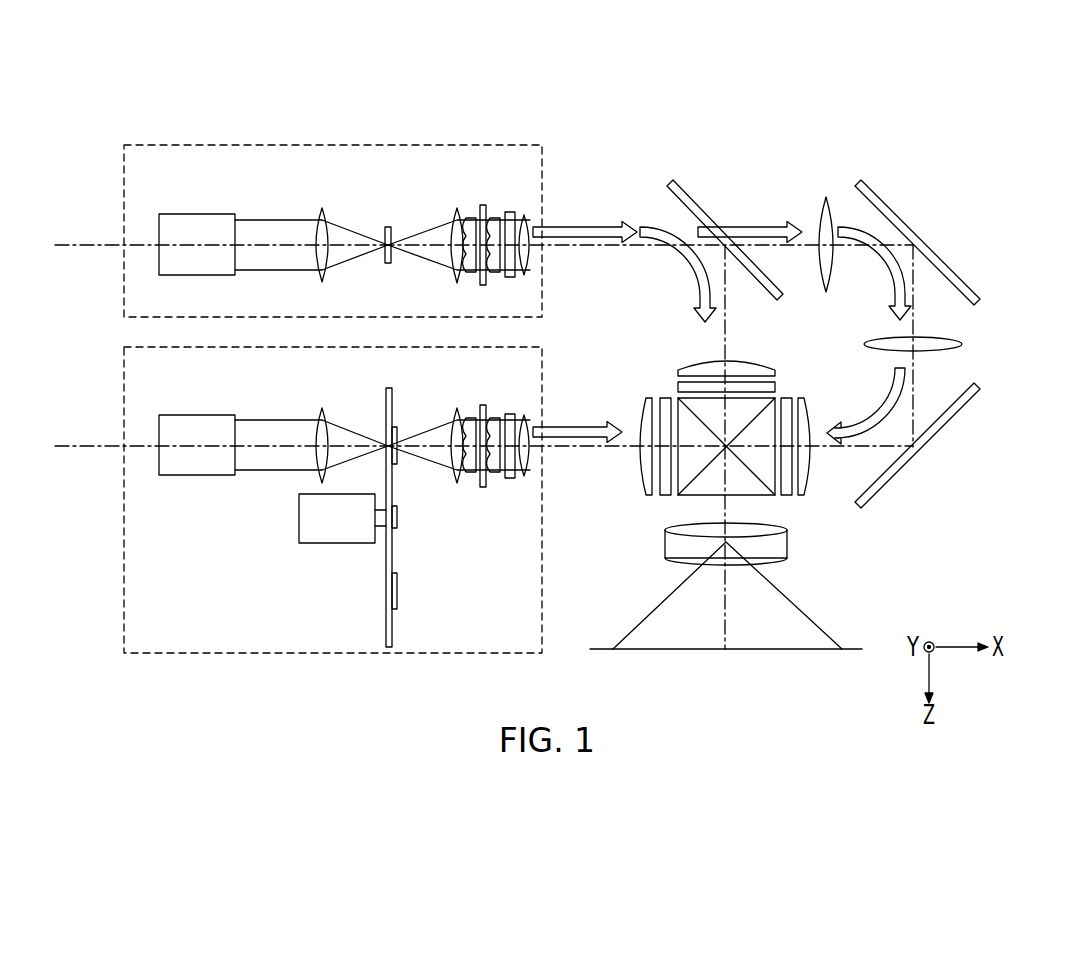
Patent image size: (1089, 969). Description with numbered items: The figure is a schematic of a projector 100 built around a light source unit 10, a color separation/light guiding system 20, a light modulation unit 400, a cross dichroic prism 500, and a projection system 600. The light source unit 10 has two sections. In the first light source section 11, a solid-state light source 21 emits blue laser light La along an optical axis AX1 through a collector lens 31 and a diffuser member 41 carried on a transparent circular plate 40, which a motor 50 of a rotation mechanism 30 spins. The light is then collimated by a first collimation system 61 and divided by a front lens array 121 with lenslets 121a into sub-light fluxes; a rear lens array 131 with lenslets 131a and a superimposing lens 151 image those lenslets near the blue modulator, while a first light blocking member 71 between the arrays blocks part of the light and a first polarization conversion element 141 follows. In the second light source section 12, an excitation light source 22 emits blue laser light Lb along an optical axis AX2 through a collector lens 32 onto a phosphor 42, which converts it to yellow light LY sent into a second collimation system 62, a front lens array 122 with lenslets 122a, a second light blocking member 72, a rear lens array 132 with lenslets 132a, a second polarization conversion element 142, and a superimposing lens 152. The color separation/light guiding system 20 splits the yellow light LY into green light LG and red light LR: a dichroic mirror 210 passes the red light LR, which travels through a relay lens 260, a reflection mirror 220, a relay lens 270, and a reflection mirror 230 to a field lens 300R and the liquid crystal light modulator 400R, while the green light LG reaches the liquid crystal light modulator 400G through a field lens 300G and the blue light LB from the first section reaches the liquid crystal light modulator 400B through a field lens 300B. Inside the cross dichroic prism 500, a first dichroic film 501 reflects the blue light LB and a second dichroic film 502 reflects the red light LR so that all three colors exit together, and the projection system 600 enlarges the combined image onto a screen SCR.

The projector 100 is at (962, 66).
The light source unit 10 is at (411, 122).
The first light source section 11 is at (228, 653).
The second light source section 12 is at (228, 145).
The color separation/light guiding system 20 is at (830, 140).
The solid-state light source 21 is at (193, 465).
The excitation light source 22 is at (193, 225).
The rotation mechanism 30 is at (405, 543).
The collector lens 31 is at (318, 483).
The collector lens 32 is at (326, 208).
The circular plate 40 is at (388, 647).
The diffuser member 41 is at (397, 430).
The phosphor 42 is at (388, 227).
The motor 50 is at (330, 540).
The first collimation system 61 is at (456, 408).
The second collimation system 62 is at (455, 282).
The first light blocking member 71 is at (483, 405).
The second light blocking member 72 is at (483, 205).
The front lens array 121 is at (471, 418).
The lenslet 121a is at (472, 474).
The front lens array 122 is at (470, 274).
The lenslet 122a is at (466, 218).
The rear lens array 131 is at (495, 418).
The lenslet 131a is at (496, 474).
The rear lens array 132 is at (497, 275).
The lenslet 132a is at (492, 218).
The first polarization conversion element 141 is at (510, 478).
The second polarization conversion element 142 is at (510, 212).
The superimposing lens 151 is at (526, 477).
The superimposing lens 152 is at (525, 215).
The dichroic mirror 210 is at (672, 182).
The light-incident-side reflection mirror 220 is at (900, 216).
The light-exiting-side reflection mirror 230 is at (921, 452).
The relay lens 260 is at (825, 197).
The relay lens 270 is at (962, 341).
The field lens 300B is at (665, 496).
The field lens 300G is at (697, 363).
The field lens 300R is at (789, 497).
The light modulation unit 400 is at (626, 578).
The liquid crystal light modulator for blue light 400B is at (652, 497).
The liquid crystal light modulator for green light 400G is at (678, 387).
The liquid crystal light modulator for red light 400R is at (805, 497).
The cross dichroic prism 500 is at (707, 563).
The first dichroic film 501 is at (708, 427).
The second dichroic film 502 is at (785, 398).
The projection system 600 is at (767, 562).
The optical axis AX1 is at (265, 446).
The optical axis AX2 is at (273, 245).
The laser light La is at (276, 428).
The laser light Lb is at (276, 258).
The yellow light LY is at (592, 227).
The blue light LB is at (573, 427).
The green light LG is at (703, 285).
The red light LR is at (738, 228).
The screen SCR is at (852, 647).